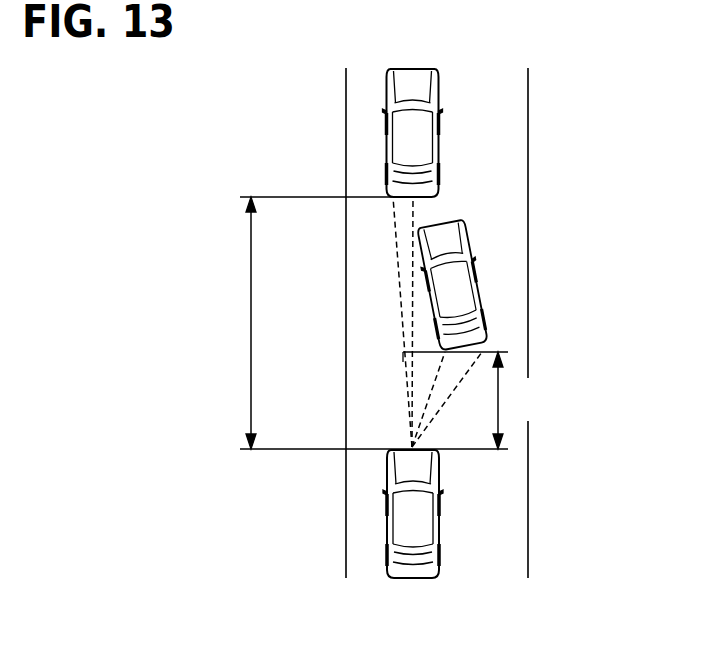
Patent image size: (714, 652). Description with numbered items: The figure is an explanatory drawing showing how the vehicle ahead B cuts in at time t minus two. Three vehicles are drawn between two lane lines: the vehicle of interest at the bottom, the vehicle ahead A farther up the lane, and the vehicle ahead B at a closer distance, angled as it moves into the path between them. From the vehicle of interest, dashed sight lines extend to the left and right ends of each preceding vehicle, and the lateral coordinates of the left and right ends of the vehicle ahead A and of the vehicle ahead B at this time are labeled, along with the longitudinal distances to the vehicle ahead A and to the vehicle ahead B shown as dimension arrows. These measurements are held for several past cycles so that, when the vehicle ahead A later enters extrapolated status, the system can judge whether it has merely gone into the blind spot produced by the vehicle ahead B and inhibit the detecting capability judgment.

The vehicle ahead A is at (437, 130).
The vehicle ahead B is at (470, 250).